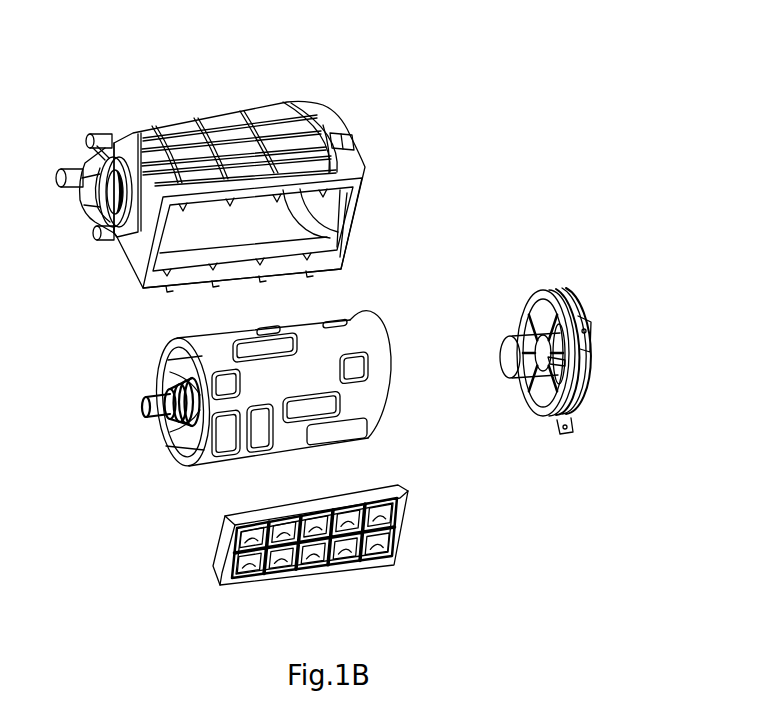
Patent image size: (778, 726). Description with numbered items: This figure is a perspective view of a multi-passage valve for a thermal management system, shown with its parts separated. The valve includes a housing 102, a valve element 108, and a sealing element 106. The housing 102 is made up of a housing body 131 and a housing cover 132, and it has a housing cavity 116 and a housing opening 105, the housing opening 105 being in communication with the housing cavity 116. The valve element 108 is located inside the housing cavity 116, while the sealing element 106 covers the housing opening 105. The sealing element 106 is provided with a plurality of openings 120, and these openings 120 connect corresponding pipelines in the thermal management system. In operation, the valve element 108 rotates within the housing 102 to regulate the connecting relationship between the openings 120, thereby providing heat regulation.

The housing 102 is at (355, 163).
The housing body 131 is at (240, 123).
The housing opening 105 is at (173, 231).
The housing cavity 116 is at (177, 247).
The valve element 108 is at (375, 412).
The housing cover 132 is at (572, 290).
The openings 120 is at (230, 530).
The sealing element 106 is at (407, 535).